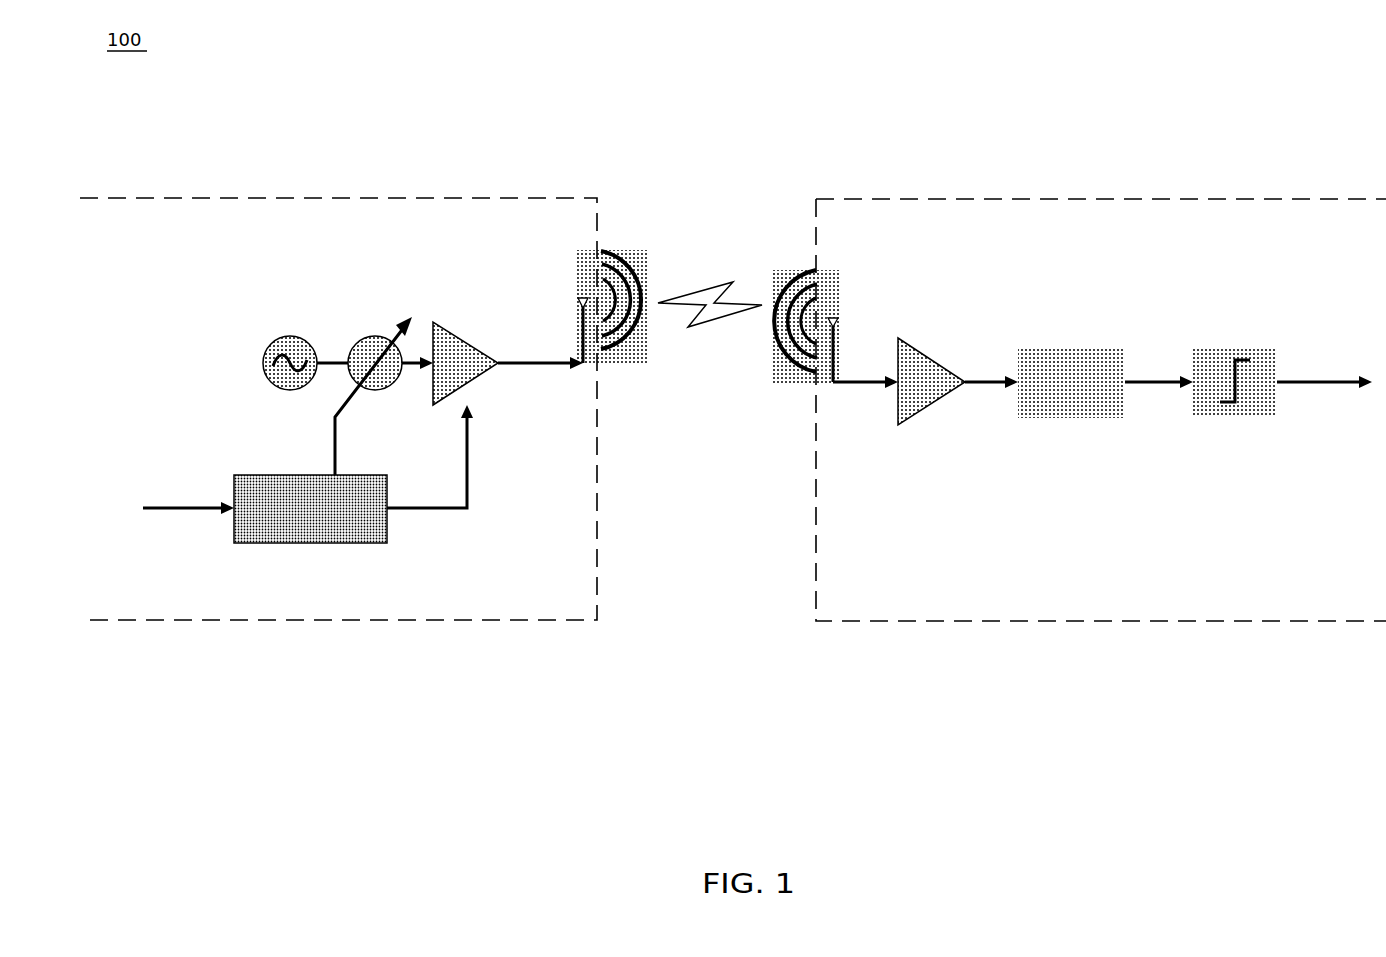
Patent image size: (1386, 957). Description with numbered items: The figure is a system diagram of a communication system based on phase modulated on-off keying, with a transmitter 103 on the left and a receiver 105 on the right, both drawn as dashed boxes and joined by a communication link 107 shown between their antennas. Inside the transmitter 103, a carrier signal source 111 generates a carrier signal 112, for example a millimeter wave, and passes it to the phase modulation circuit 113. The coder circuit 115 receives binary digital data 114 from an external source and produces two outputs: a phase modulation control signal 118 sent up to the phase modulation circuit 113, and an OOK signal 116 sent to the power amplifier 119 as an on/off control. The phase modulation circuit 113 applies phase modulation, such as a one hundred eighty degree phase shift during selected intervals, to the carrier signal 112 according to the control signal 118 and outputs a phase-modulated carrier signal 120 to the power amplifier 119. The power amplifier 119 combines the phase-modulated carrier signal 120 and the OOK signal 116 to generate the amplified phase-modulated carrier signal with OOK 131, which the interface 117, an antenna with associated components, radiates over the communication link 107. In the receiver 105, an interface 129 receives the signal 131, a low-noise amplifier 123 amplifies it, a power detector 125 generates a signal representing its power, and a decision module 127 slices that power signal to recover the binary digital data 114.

The transmitter 103 is at (208, 198).
The receiver 105 is at (925, 199).
The communication link 107 is at (706, 295).
The carrier signal source 111 is at (283, 338).
The carrier signal 112 is at (332, 358).
The phase modulation circuit 113 is at (381, 338).
The binary digital data 114 is at (173, 502).
The coder circuit 115 is at (307, 547).
The OOK signal 116 is at (452, 512).
The interface 117 is at (581, 296).
The phase modulation control signal 118 is at (330, 420).
The power amplifier 119 is at (449, 323).
The phase-modulated carrier signal 120 is at (404, 378).
The low-noise amplifier 123 is at (920, 423).
The power detector 125 is at (1075, 418).
The decision module 127 is at (1233, 418).
The interface 129 is at (832, 383).
The amplified phase-modulated carrier signal with OOK 131 is at (527, 368).